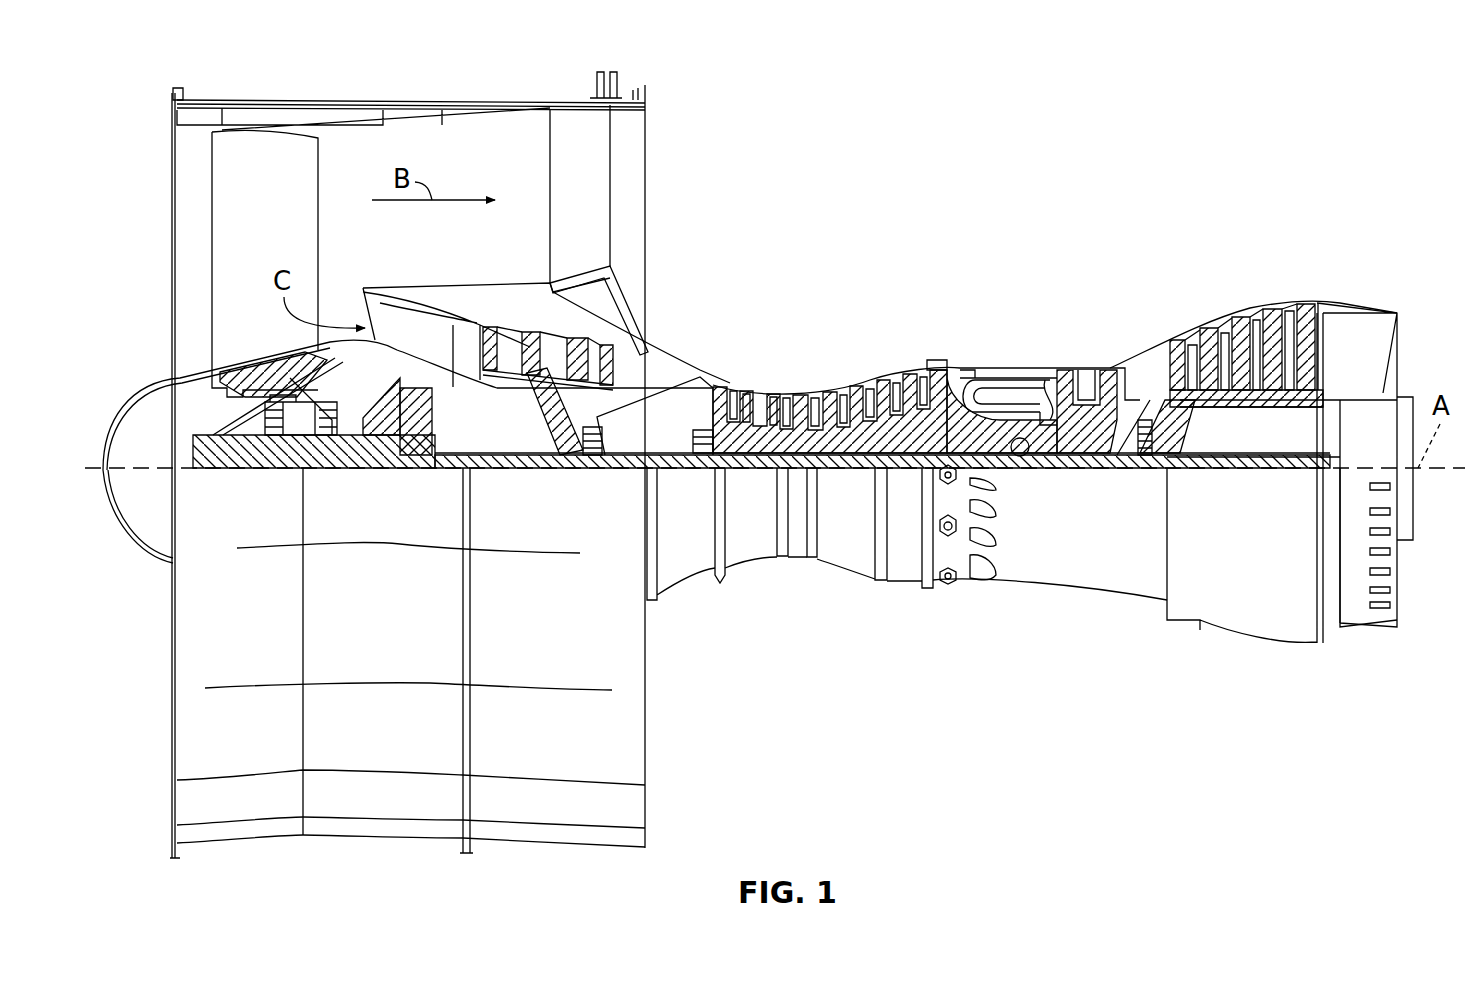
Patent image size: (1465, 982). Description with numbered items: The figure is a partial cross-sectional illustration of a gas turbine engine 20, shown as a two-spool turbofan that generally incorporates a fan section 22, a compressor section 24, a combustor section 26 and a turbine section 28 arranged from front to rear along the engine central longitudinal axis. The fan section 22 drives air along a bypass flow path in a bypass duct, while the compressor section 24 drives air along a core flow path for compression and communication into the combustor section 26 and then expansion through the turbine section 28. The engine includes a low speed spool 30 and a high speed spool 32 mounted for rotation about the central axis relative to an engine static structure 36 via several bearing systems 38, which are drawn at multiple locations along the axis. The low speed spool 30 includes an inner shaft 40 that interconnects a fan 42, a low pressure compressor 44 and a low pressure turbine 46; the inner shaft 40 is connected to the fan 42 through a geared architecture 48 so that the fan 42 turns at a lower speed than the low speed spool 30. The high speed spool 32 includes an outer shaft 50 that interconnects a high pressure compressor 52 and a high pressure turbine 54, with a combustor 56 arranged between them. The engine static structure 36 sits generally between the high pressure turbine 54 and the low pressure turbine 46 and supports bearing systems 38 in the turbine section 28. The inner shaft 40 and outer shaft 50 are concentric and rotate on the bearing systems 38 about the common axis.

The gas turbine engine 20 is at (1220, 134).
The fan section 22 is at (282, 92).
The compressor section 24 is at (838, 325).
The combustor section 26 is at (1000, 322).
The turbine section 28 is at (1150, 306).
The low speed spool 30 is at (871, 470).
The high speed spool 32 is at (918, 415).
The engine static structure 36 is at (908, 590).
The bearing systems 38 is at (272, 435).
The inner shaft 40 is at (660, 470).
The fan 42 is at (291, 231).
The low pressure compressor 44 is at (560, 345).
The low pressure turbine 46 is at (1253, 322).
The geared architecture 48 is at (413, 438).
The outer shaft 50 is at (1037, 437).
The high pressure compressor 52 is at (827, 435).
The high pressure turbine 54 is at (1095, 365).
The combustor 56 is at (1010, 385).